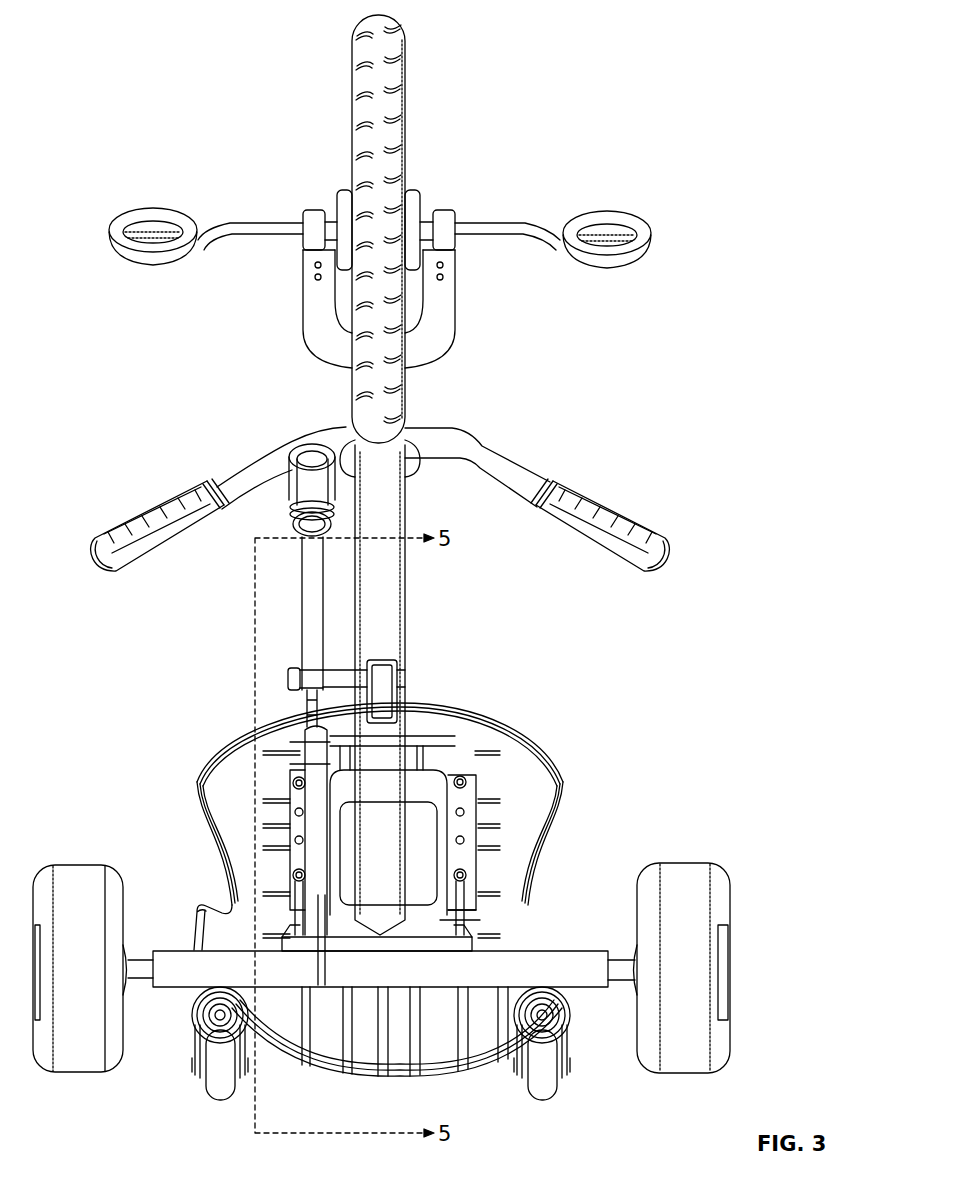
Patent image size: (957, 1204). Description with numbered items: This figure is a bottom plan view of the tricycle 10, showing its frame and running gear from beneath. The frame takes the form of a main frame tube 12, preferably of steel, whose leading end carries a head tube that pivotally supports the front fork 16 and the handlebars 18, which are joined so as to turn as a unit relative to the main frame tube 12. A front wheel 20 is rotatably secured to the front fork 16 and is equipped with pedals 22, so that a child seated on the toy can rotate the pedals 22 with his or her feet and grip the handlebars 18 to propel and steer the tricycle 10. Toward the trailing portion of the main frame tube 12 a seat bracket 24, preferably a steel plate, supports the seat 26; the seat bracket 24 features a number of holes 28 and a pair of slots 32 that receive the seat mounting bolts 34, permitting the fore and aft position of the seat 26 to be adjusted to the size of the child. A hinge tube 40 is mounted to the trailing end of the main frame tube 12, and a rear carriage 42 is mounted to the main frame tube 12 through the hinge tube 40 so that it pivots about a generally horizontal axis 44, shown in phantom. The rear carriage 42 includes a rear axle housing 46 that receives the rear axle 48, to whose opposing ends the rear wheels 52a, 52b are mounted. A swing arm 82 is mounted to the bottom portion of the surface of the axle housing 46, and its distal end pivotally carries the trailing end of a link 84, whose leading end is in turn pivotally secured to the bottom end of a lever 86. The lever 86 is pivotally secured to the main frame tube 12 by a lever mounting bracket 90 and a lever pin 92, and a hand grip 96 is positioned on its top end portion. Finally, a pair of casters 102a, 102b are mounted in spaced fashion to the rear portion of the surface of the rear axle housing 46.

The tricycle 10 is at (96, 50).
The main frame tube 12 is at (405, 603).
The front fork 16 is at (447, 314).
The handlebars 18 is at (490, 456).
The front wheel 20 is at (405, 90).
The pedals 22 is at (650, 240).
The seat bracket 24 is at (480, 812).
The seat 26 is at (526, 860).
The holes 28 is at (466, 840).
The slots 32 is at (280, 915).
The seat mounting bolts 34 is at (475, 782).
The hinge tube 40 is at (345, 905).
The rear carriage 42 is at (603, 1095).
The horizontal axis 44 is at (490, 915).
The rear axle housing 46 is at (582, 975).
The rear axle 48 is at (140, 968).
The rear wheel 52a is at (690, 1040).
The rear wheel 52b is at (78, 1073).
The swing arm 82 is at (328, 965).
The link 84 is at (312, 820).
The lever 86 is at (325, 602).
The lever mounting bracket 90 is at (400, 702).
The lever pin 92 is at (345, 680).
The hand grip 96 is at (310, 480).
The caster 102a is at (545, 1086).
The caster 102b is at (222, 1086).